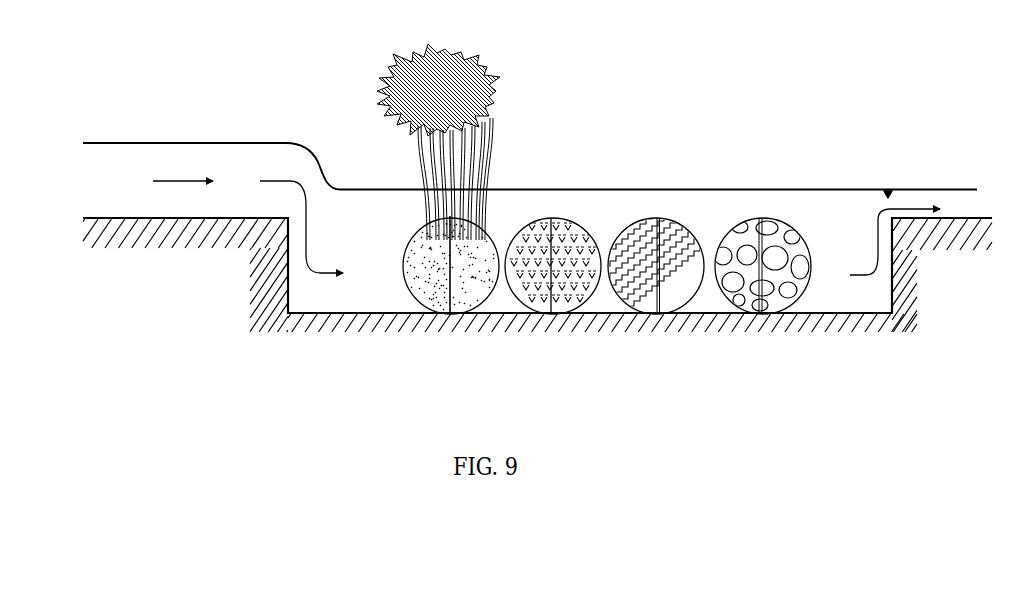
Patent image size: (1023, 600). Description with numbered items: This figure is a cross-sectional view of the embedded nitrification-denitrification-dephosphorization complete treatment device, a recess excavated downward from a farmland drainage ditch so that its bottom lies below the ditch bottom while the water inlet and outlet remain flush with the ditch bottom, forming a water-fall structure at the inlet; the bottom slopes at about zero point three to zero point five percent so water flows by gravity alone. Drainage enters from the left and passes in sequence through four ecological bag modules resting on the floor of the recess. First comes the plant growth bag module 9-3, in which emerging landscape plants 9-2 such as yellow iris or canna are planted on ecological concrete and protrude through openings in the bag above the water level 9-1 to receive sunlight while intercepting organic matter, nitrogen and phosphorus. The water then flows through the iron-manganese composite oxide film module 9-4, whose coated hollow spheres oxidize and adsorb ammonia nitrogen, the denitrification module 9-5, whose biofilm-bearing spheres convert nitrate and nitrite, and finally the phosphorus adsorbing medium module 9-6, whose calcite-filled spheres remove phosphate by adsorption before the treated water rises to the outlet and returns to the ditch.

The water level 9-1 is at (280, 142).
The emerging landscape plants 9-2 is at (500, 93).
The plant growth bag module 9-3 is at (484, 229).
The iron-manganese composite oxide film module 9-4 is at (588, 229).
The denitrification module 9-5 is at (692, 229).
The phosphorus adsorbing medium module 9-6 is at (800, 229).